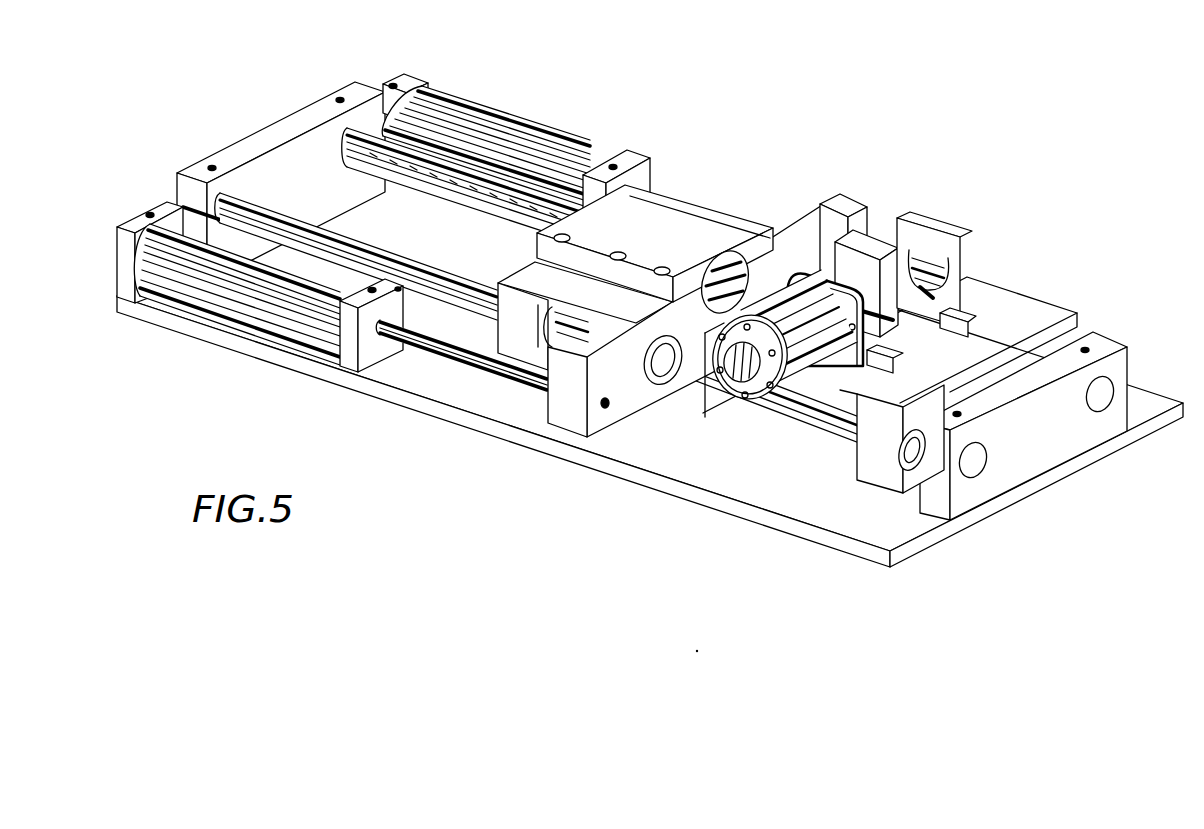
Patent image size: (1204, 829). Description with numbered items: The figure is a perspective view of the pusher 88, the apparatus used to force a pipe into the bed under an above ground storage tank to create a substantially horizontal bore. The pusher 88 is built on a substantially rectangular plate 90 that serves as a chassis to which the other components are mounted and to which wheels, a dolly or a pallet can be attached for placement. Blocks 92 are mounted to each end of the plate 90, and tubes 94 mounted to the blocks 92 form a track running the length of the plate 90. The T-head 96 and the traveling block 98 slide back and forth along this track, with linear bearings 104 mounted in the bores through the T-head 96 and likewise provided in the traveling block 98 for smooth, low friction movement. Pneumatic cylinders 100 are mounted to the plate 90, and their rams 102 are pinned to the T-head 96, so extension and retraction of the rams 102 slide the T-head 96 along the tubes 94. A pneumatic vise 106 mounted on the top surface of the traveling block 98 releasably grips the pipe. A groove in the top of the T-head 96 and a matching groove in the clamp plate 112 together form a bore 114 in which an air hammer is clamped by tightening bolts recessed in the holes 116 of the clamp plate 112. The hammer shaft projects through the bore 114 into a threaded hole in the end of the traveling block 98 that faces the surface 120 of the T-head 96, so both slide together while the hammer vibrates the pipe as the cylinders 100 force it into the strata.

The pusher 88 is at (716, 143).
The rectangular plate 90 is at (389, 231).
The blocks 92 is at (322, 185).
The tubes 94 is at (510, 205).
The T-head 96 is at (607, 308).
The traveling block 98 is at (1023, 324).
The pneumatic cylinders 100 is at (486, 117).
The rams 102 is at (492, 378).
The linear bearings 104 is at (675, 388).
The pneumatic vise 106 is at (953, 248).
The clamp plate 112 is at (642, 225).
The bore 114 is at (774, 236).
The holes 116 is at (700, 224).
The surface 120 is at (635, 383).